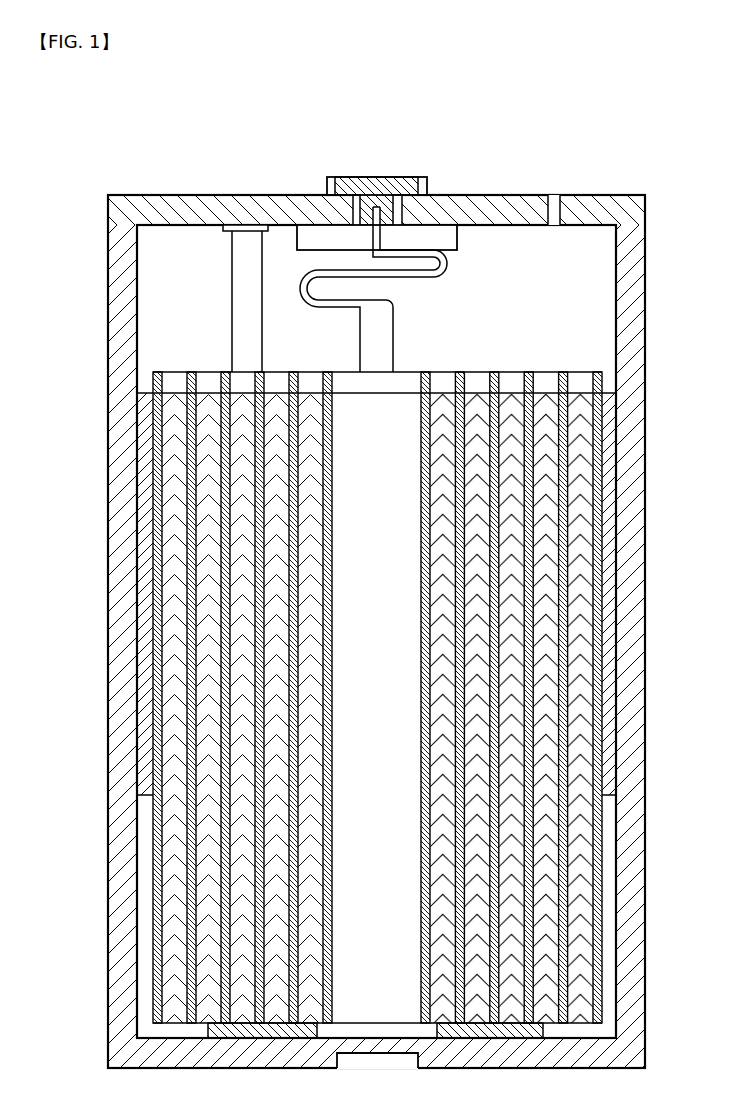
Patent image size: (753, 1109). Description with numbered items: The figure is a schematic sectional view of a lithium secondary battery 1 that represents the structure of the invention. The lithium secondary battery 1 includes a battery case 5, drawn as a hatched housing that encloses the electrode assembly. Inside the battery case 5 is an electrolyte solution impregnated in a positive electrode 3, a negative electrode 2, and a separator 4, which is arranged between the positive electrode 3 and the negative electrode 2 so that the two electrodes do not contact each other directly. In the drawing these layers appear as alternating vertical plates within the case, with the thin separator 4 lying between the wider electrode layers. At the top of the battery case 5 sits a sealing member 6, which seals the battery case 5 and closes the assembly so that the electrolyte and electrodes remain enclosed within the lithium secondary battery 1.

The lithium secondary battery 1 is at (551, 153).
The negative electrode 2 is at (582, 858).
The positive electrode 3 is at (210, 856).
The separator 4 is at (187, 983).
The battery case 5 is at (122, 287).
The sealing member 6 is at (333, 180).